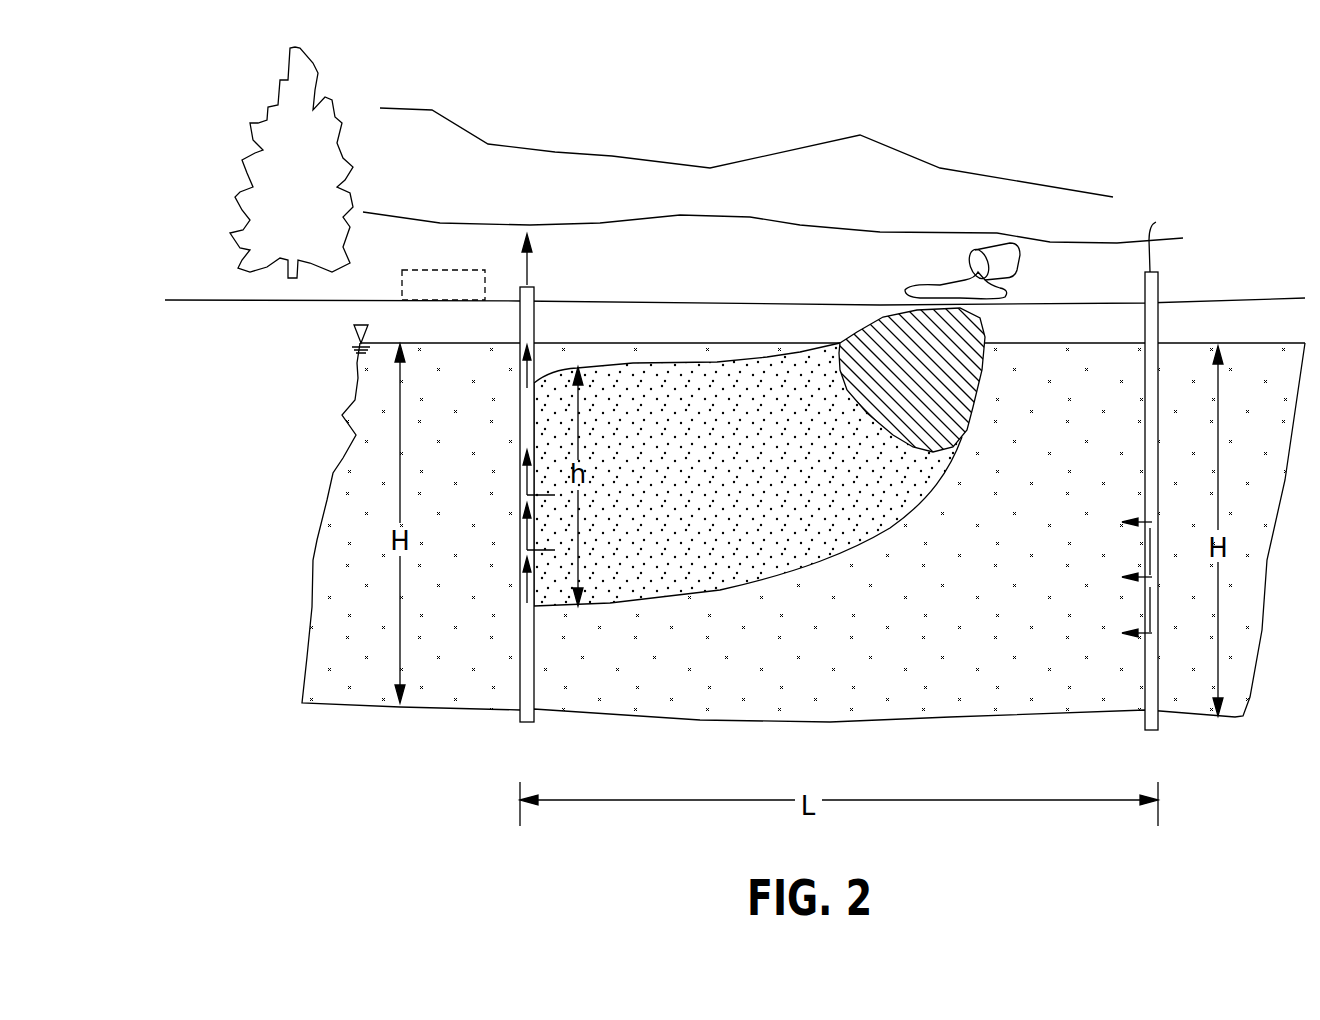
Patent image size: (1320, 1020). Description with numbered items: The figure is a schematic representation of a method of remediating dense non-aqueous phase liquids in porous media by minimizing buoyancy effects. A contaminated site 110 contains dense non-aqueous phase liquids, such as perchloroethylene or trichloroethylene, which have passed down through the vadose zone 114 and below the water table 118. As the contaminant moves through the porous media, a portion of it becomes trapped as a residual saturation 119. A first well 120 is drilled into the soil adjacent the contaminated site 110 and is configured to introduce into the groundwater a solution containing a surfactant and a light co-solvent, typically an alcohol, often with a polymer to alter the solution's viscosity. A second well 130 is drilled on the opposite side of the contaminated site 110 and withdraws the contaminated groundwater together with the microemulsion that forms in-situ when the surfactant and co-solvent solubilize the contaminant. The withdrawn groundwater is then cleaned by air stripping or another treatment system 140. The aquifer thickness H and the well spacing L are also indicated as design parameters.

The contaminated site 110 is at (1040, 158).
The vadose zone 114 is at (627, 327).
The water table 118 is at (360, 343).
The residual saturation 119 is at (960, 397).
The first well 120 is at (1143, 674).
The second well 130 is at (518, 633).
The treatment system 140 is at (438, 272).